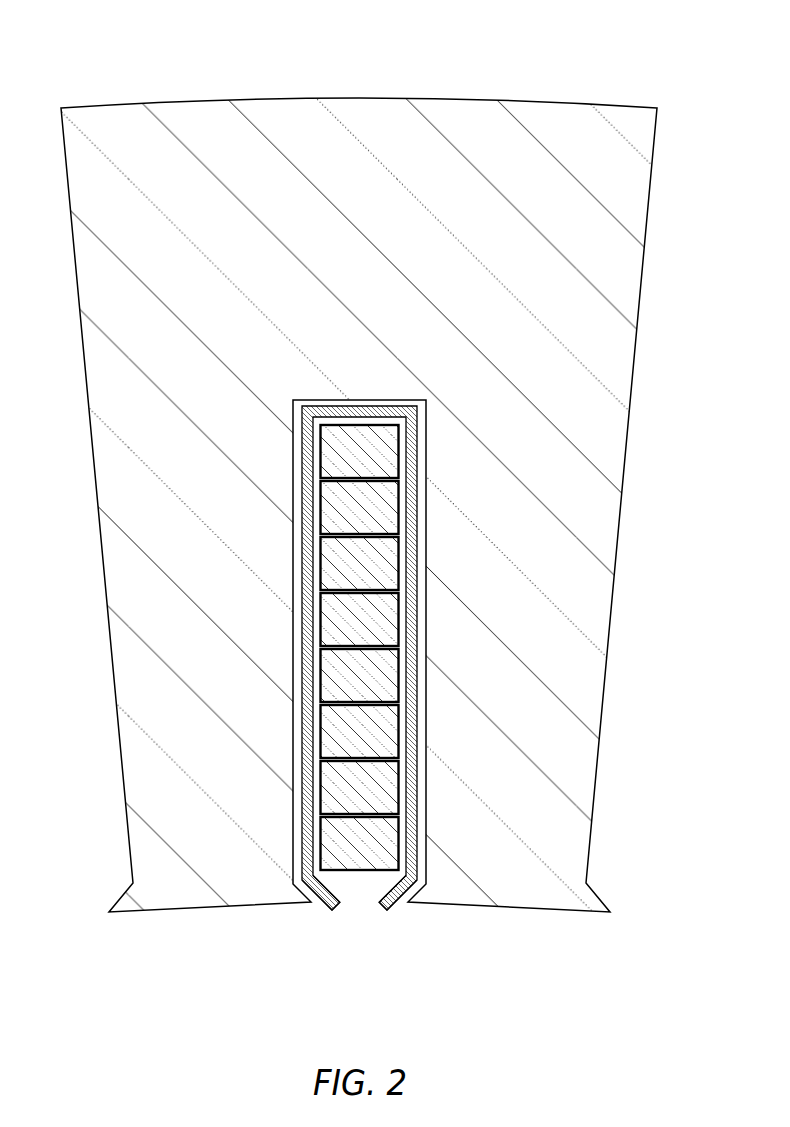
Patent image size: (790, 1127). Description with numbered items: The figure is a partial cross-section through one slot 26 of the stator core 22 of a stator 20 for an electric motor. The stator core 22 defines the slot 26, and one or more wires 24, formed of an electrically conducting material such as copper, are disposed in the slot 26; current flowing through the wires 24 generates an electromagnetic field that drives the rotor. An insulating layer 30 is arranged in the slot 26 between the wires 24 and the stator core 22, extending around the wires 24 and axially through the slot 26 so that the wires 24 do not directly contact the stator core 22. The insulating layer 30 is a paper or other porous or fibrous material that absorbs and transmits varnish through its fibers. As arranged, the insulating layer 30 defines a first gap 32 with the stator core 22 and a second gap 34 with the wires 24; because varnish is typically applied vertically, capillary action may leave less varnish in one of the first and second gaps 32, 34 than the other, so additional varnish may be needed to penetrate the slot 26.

The stator 20 is at (636, 64).
The stator core 22 is at (138, 103).
The wires 24 is at (342, 618).
The slot 26 is at (429, 683).
The insulating layer 30 is at (412, 900).
The first gap 32 is at (308, 892).
The second gap 34 is at (362, 905).